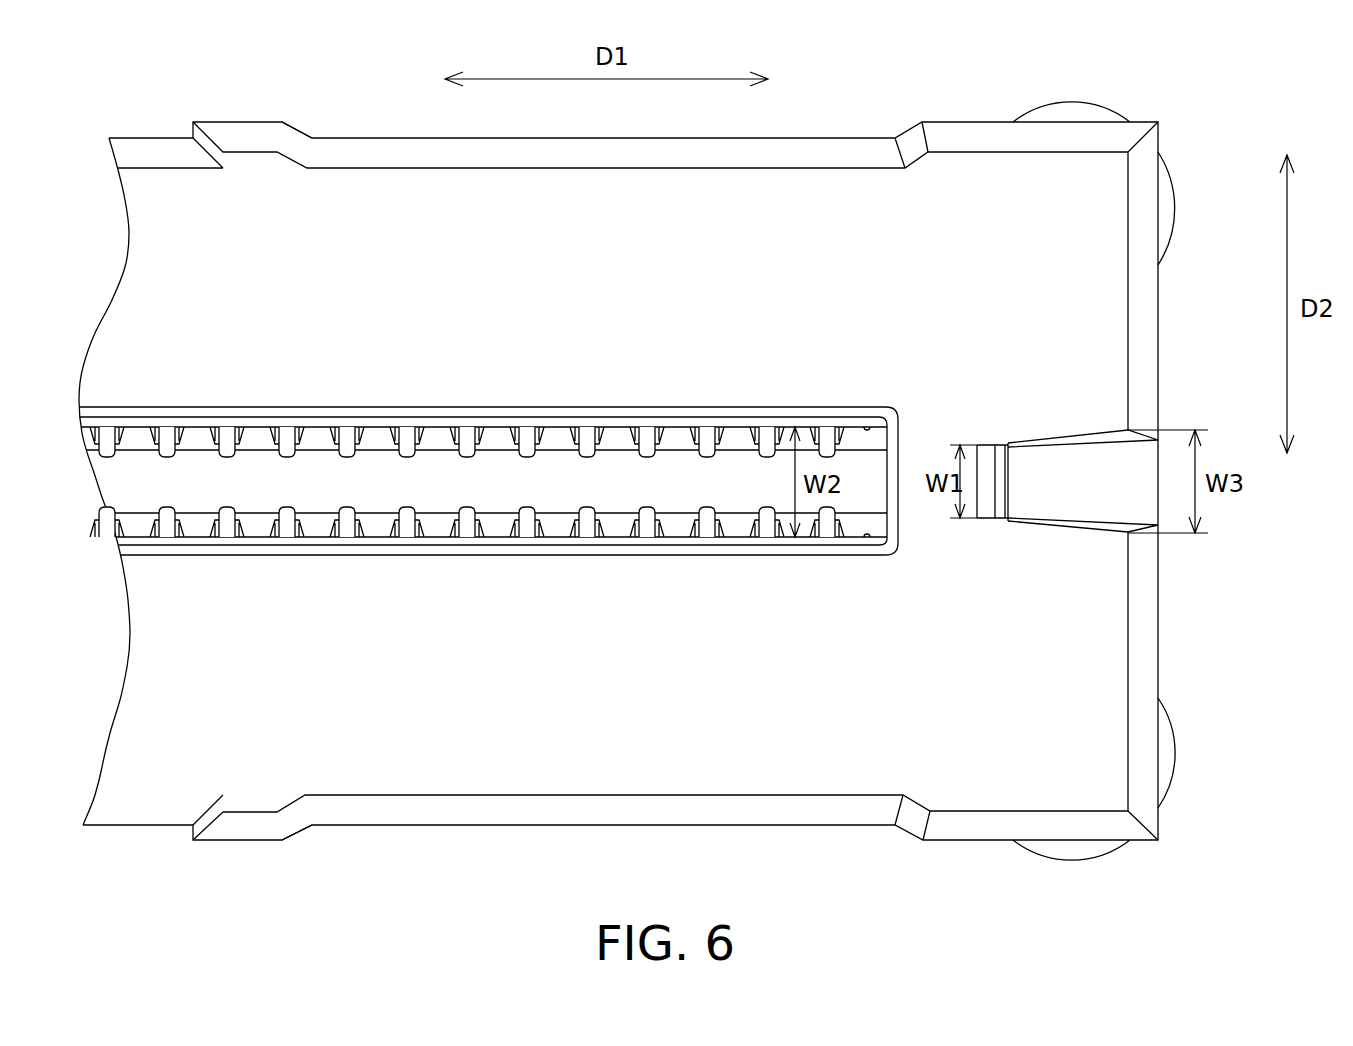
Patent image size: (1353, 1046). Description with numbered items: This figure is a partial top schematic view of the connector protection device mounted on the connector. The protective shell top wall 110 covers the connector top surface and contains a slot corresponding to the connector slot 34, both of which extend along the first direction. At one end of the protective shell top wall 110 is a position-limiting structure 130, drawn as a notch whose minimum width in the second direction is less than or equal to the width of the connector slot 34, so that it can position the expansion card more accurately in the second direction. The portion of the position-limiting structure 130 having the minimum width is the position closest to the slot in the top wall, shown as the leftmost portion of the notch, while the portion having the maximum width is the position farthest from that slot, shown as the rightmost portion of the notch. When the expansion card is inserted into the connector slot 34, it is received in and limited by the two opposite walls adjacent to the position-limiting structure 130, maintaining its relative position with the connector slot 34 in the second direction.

The protective shell top wall 110 is at (1073, 187).
The connector slot 34 is at (524, 473).
The position-limiting structure 130 is at (1077, 488).